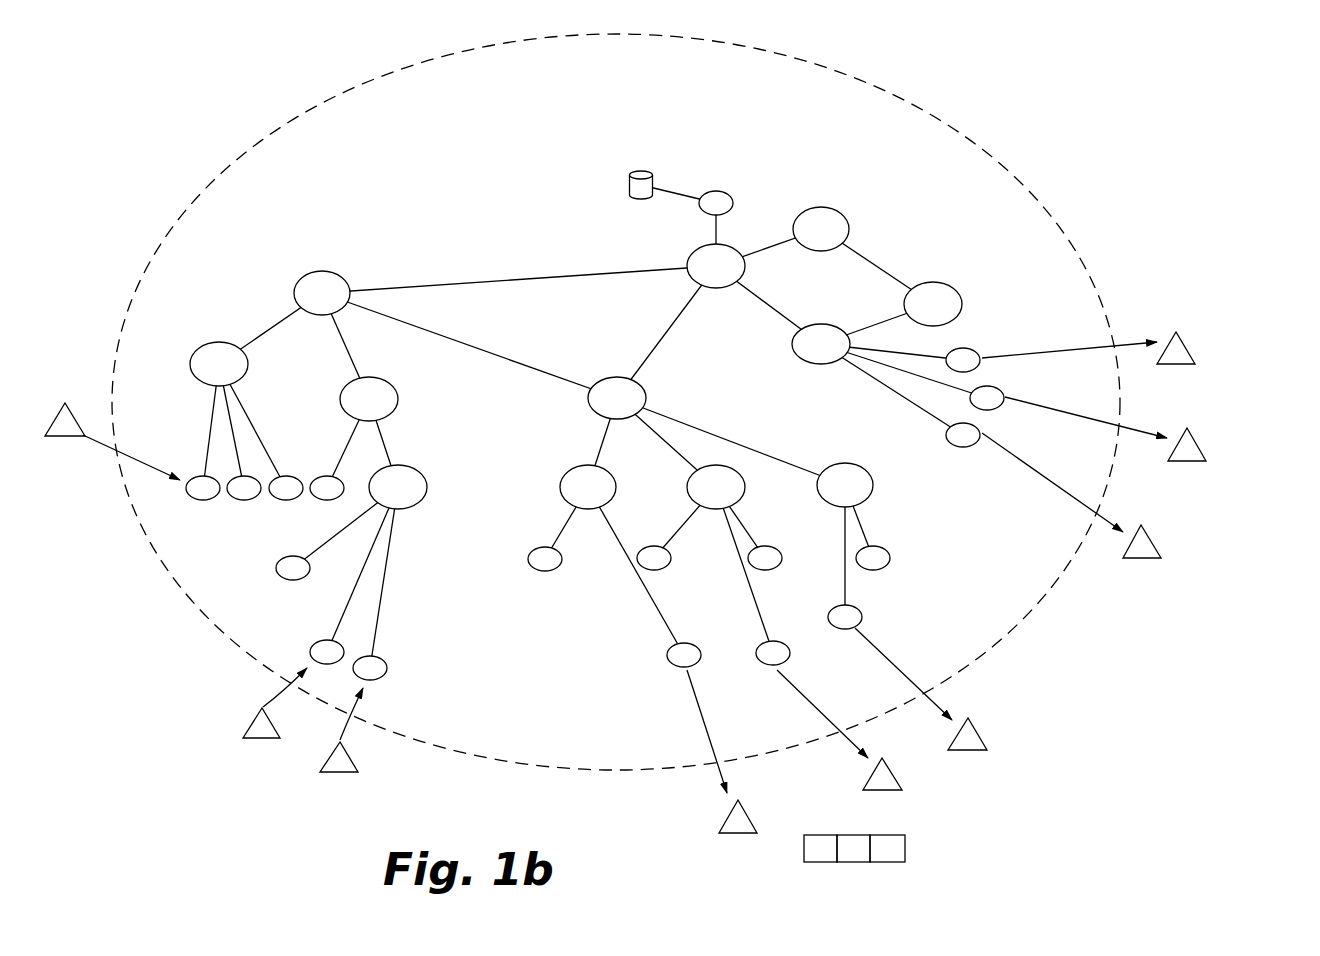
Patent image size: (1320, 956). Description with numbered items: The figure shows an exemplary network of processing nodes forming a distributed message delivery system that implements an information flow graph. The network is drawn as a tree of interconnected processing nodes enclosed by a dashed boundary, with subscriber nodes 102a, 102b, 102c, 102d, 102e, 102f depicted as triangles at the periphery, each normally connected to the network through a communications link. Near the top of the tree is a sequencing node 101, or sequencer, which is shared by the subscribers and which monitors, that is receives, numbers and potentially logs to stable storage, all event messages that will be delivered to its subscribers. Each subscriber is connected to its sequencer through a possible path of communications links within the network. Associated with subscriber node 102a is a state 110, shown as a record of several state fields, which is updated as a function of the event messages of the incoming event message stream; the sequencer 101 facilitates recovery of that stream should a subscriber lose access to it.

The sequencing node 101 is at (721, 196).
The subscriber node 102a is at (730, 827).
The subscriber node 102b is at (888, 778).
The subscriber node 102c is at (973, 742).
The subscriber node 102d is at (1148, 548).
The subscriber node 102e is at (1193, 450).
The subscriber node 102f is at (1183, 352).
The state 110 is at (913, 867).